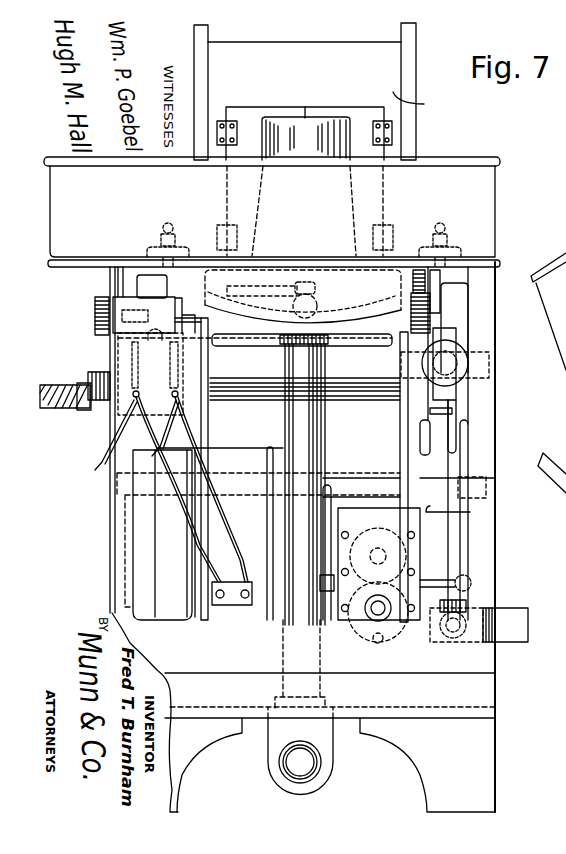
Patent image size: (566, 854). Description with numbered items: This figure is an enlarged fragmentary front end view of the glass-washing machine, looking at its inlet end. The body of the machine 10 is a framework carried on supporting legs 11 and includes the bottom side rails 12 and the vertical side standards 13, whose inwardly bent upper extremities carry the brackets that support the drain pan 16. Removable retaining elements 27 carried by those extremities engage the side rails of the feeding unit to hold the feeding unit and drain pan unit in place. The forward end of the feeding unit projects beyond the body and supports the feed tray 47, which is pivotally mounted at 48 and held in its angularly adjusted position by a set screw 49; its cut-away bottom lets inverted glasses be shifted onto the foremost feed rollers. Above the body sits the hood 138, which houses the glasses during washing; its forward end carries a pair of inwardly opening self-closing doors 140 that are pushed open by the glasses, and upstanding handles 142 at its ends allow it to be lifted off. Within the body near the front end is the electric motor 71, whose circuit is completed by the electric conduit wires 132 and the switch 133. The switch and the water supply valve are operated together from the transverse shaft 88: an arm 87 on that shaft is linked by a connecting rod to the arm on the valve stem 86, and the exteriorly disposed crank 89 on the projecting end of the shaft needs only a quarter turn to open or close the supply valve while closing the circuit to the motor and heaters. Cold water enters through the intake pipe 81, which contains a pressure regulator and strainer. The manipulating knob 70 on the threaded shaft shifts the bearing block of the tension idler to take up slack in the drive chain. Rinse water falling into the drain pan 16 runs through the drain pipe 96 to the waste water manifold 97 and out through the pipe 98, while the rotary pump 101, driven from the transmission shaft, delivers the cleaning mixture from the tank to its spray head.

The body of the machine 10 is at (515, 537).
The supporting legs 11 is at (488, 775).
The bottom side rails 12 is at (488, 693).
The vertical side standards 13 is at (488, 562).
The drain pan 16 is at (250, 312).
The removable retaining elements 27 is at (447, 255).
The feed tray 47 is at (272, 212).
The pivot of feed tray 48 is at (125, 300).
The set screw 49 is at (97, 322).
The manipulating knob 70 is at (466, 361).
The electric motor 71 is at (162, 535).
The intake pipe 81 is at (516, 622).
The valve stem 86 is at (470, 512).
The arm 87 is at (450, 412).
The transverse shaft 88 is at (368, 394).
The crank 89 is at (82, 405).
The drain pipe 96 is at (297, 425).
The waste water manifold 97 is at (277, 770).
The pipe 98 is at (320, 770).
The rotary pump 101 is at (355, 610).
The electric conduit wires 132 is at (233, 575).
The switch 133 is at (150, 362).
The hood 138 is at (425, 104).
The self-closing doors 140 is at (250, 113).
The upstanding handles 142 is at (417, 35).